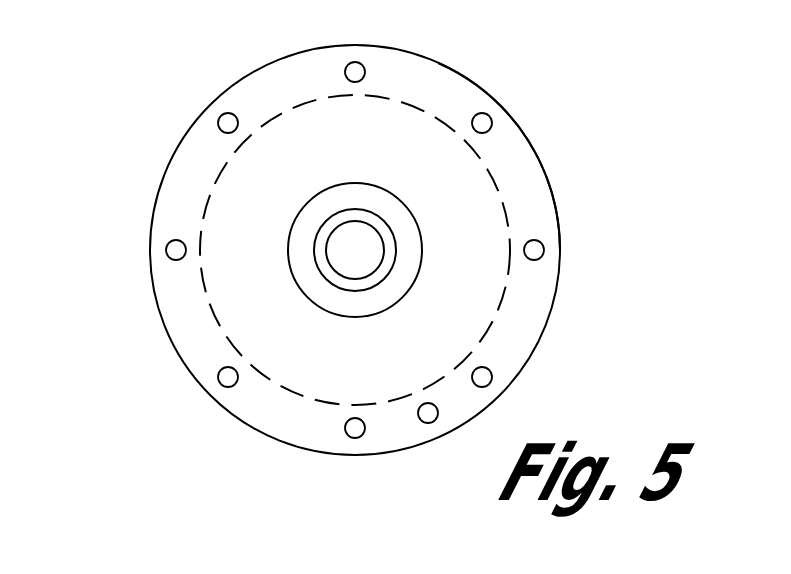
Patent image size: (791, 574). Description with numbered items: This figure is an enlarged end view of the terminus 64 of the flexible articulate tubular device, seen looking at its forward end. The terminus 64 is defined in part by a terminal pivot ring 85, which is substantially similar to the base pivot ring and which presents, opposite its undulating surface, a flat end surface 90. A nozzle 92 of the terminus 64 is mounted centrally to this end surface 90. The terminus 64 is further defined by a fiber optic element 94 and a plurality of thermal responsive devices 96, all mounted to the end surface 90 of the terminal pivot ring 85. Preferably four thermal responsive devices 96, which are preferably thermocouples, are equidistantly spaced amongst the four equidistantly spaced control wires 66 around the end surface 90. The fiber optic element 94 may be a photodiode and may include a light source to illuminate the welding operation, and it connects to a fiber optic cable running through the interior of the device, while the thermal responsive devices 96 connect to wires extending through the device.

The terminus 64 is at (530, 140).
The terminal pivot ring 85 is at (438, 63).
The flat end surface 90 is at (473, 200).
The nozzle 92 is at (300, 270).
The control wires 66 is at (355, 62).
The thermal responsive devices 96 is at (490, 116).
The fiber optic element 94 is at (428, 423).